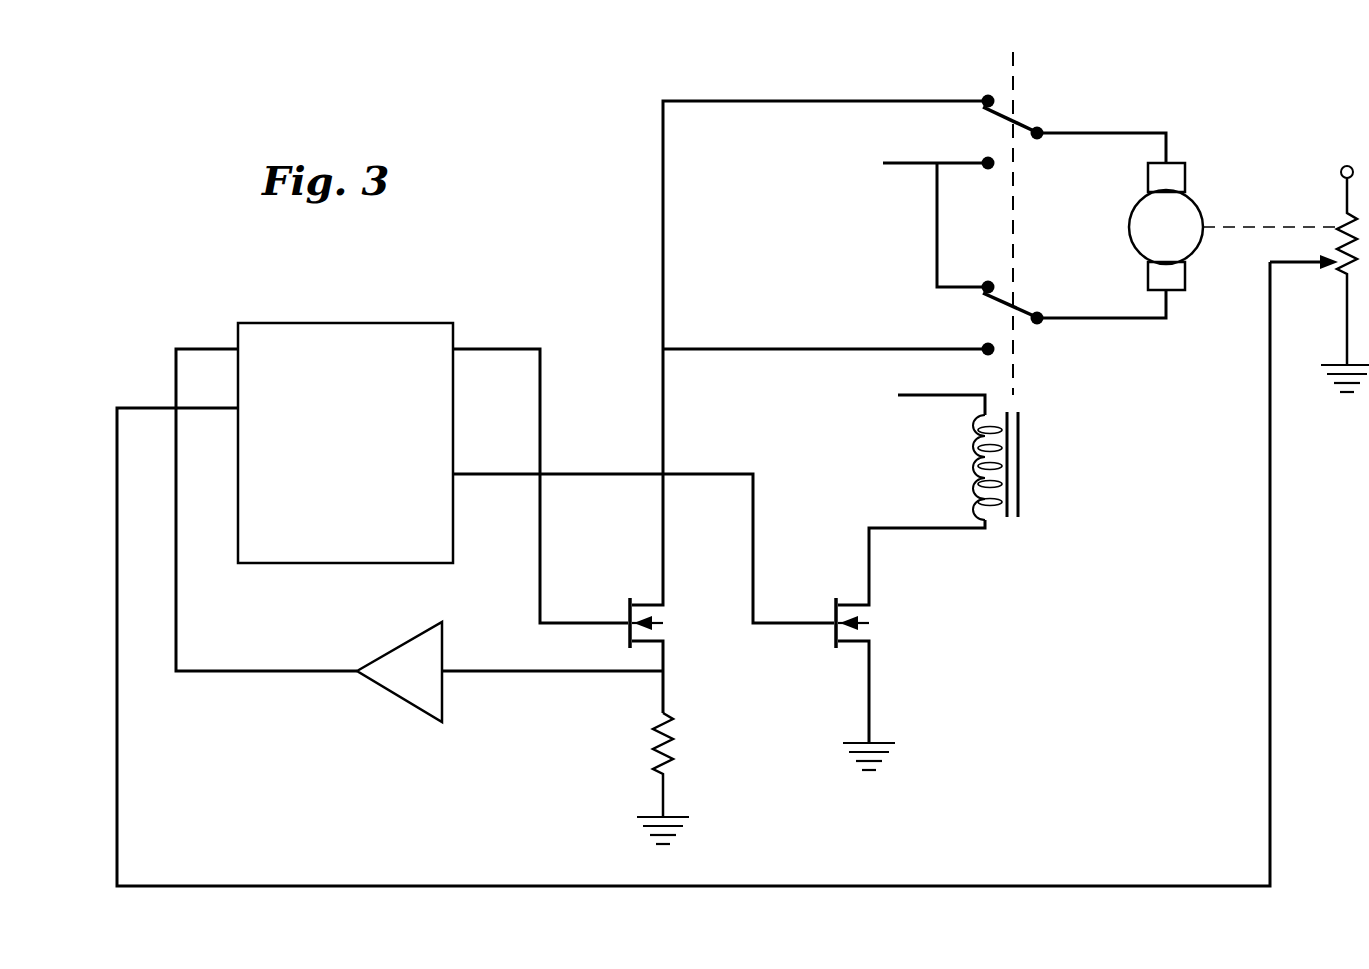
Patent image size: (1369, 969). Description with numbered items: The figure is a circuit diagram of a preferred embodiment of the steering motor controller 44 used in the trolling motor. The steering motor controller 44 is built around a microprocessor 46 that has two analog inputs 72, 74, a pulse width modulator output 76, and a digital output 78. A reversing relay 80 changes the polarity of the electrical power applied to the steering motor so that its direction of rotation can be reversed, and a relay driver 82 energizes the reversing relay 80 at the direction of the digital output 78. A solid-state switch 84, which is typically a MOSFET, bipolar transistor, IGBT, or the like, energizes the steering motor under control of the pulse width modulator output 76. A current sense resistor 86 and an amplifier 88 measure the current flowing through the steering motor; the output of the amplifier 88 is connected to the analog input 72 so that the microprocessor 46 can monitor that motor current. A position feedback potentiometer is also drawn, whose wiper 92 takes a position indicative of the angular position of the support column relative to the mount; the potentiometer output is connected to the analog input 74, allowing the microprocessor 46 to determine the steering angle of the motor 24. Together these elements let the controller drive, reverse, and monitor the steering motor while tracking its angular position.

The motor 24 is at (1200, 212).
The steering motor controller 44 is at (1106, 111).
The microprocessor 46 is at (437, 321).
The analog input 72 is at (212, 348).
The analog input 74 is at (217, 409).
The pulse width modulator output 76 is at (503, 348).
The digital output 78 is at (495, 472).
The reversing relay 80 is at (1015, 237).
The relay driver 82 is at (872, 625).
The solid-state switch 84 is at (667, 625).
The current sense resistor 86 is at (676, 735).
The amplifier 88 is at (396, 697).
The wiper 92 is at (1333, 273).